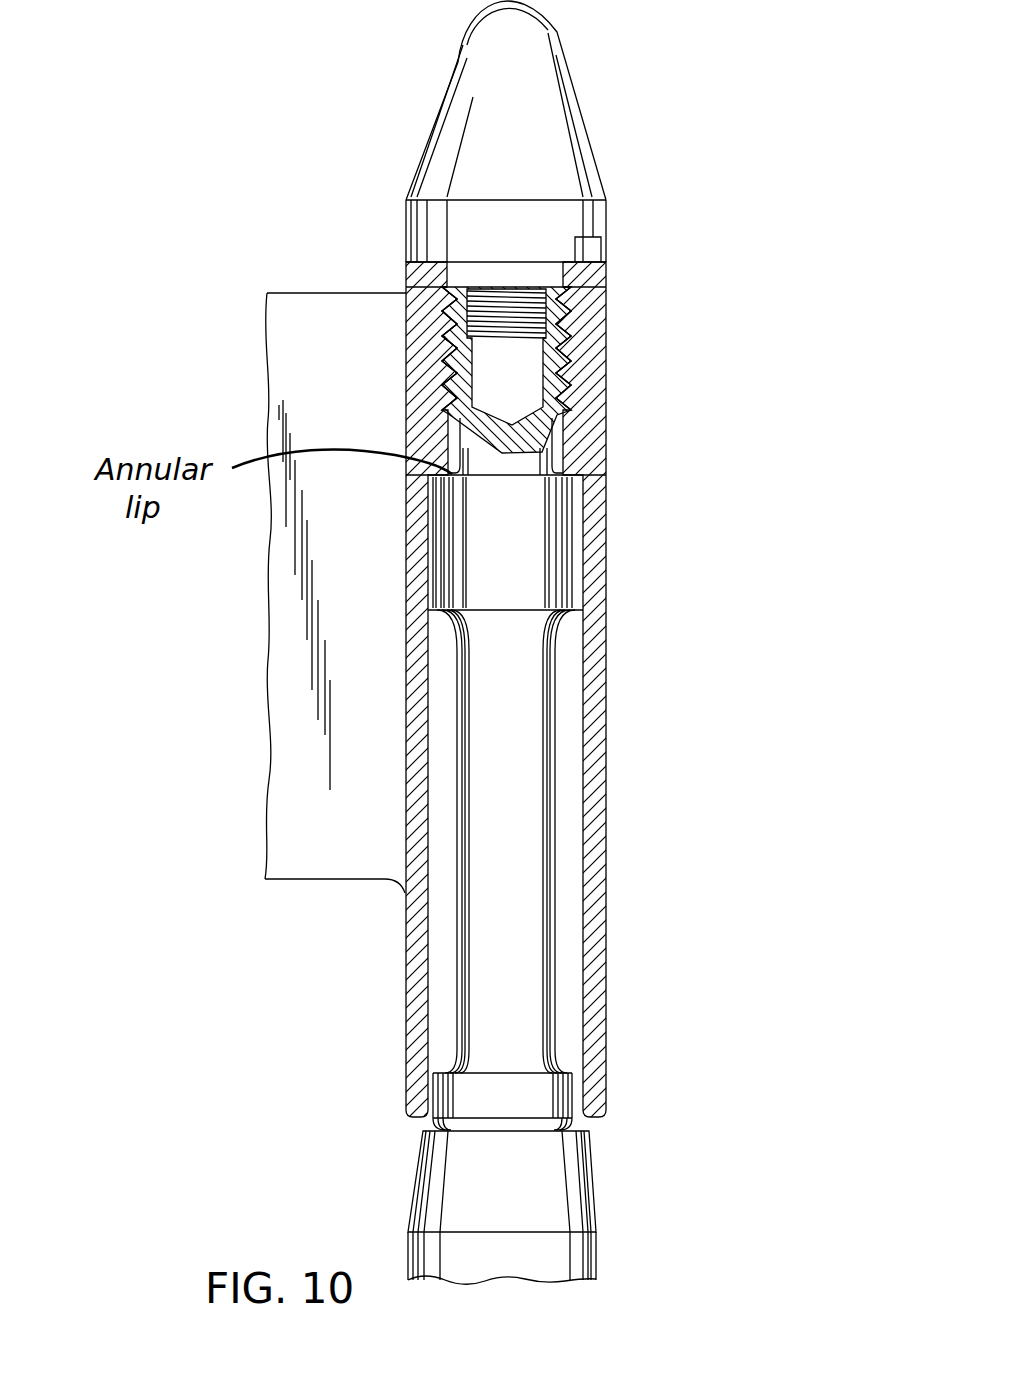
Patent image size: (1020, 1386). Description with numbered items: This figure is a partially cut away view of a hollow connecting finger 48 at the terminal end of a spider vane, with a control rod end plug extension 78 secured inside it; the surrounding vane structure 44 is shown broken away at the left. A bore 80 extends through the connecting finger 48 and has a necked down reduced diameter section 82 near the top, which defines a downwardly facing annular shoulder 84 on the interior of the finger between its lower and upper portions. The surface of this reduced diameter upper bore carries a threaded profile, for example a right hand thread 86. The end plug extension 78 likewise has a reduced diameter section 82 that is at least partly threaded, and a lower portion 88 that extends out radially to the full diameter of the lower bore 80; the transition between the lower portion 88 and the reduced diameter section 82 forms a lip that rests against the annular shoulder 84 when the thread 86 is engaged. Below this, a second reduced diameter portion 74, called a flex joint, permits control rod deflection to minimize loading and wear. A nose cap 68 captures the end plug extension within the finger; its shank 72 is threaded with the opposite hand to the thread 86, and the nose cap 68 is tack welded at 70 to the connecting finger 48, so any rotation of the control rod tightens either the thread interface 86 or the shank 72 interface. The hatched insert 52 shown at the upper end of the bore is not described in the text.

The frame portion 44 is at (395, 880).
The connecting finger 48 is at (606, 957).
The nozzle plug 52 is at (580, 378).
The nose cap 68 is at (430, 118).
The tack weld 70 is at (606, 252).
The shank 72 is at (560, 300).
The second reduced diameter portion 74 is at (553, 869).
The control rod end plug extension 78 is at (411, 1200).
The bore 80 is at (573, 782).
The reduced diameter section 82 is at (574, 355).
The annular shoulder 84 is at (585, 468).
The thread 86 is at (405, 300).
The lower portion 88 is at (405, 475).